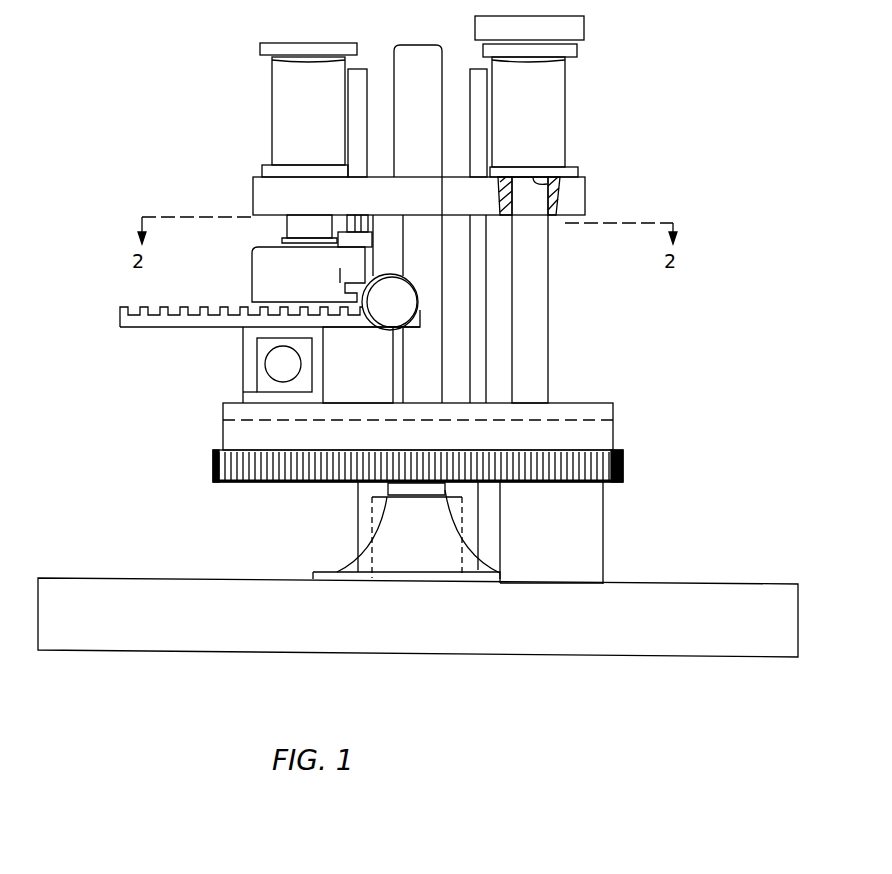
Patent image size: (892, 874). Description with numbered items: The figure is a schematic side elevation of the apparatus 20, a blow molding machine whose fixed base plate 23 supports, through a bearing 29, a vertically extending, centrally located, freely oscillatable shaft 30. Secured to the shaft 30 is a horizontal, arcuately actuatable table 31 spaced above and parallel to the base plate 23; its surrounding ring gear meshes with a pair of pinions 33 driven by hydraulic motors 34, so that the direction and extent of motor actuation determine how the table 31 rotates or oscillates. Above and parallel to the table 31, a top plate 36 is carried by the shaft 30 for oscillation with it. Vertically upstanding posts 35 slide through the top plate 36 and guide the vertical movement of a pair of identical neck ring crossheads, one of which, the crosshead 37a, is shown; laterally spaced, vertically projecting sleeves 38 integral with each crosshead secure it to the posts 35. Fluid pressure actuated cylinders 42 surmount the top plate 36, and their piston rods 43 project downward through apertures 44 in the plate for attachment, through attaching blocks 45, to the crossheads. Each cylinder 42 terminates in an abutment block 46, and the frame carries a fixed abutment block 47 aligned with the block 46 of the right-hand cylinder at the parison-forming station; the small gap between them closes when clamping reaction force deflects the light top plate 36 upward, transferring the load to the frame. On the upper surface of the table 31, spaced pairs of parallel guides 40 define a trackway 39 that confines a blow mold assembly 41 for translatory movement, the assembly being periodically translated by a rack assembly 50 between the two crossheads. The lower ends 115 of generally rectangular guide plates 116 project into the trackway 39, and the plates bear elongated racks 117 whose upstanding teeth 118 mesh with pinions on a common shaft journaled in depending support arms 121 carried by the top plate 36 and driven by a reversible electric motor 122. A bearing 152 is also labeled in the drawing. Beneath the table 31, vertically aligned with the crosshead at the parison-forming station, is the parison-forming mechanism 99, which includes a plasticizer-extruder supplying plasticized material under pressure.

The apparatus 20 is at (622, 370).
The base plate 23 is at (610, 635).
The bearing 29 is at (400, 490).
The shaft 30 is at (426, 56).
The table 31 is at (553, 436).
The pinions 33 is at (442, 452).
The hydraulic motors 34 is at (462, 516).
The posts 35 is at (352, 125).
The top plate 36 is at (582, 190).
The neck ring crosshead 37a is at (360, 268).
The sleeves 38 is at (357, 218).
The trackway 39 is at (407, 418).
The guides 40 is at (613, 430).
The blow mold assembly 41 is at (246, 378).
The fluid pressure actuated cylinders 42 is at (272, 130).
The piston rods 43 is at (303, 218).
The apertures 44 is at (536, 178).
The attaching blocks 45 is at (284, 240).
The abutment block 46 is at (285, 57).
The fixed abutment block 47 is at (585, 25).
The rack assembly 50 is at (358, 322).
The parison-forming mechanism 99 is at (608, 548).
The lower ends 115 is at (253, 411).
The guide plates 116 is at (247, 392).
The racks 117 is at (138, 320).
The teeth 118 is at (183, 312).
The support arms 121 is at (403, 232).
The reversible electric motor 122 is at (414, 300).
The bearing 152 is at (278, 358).